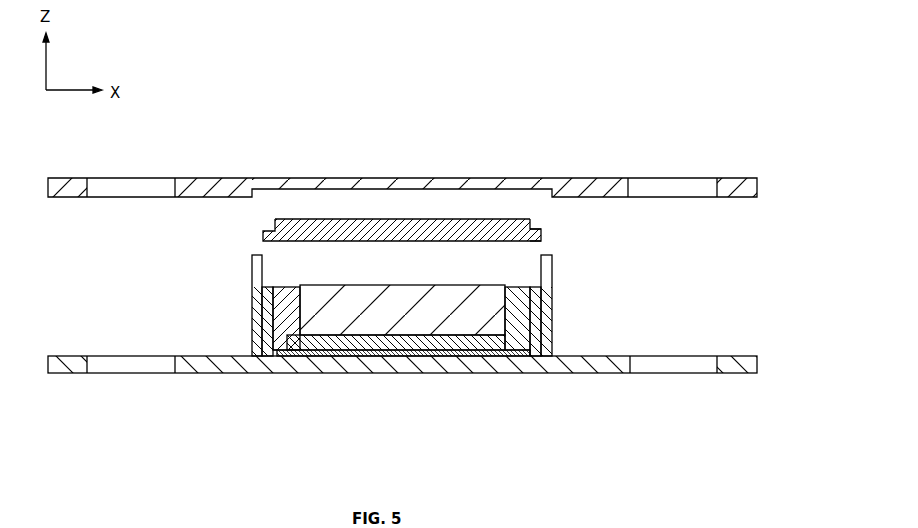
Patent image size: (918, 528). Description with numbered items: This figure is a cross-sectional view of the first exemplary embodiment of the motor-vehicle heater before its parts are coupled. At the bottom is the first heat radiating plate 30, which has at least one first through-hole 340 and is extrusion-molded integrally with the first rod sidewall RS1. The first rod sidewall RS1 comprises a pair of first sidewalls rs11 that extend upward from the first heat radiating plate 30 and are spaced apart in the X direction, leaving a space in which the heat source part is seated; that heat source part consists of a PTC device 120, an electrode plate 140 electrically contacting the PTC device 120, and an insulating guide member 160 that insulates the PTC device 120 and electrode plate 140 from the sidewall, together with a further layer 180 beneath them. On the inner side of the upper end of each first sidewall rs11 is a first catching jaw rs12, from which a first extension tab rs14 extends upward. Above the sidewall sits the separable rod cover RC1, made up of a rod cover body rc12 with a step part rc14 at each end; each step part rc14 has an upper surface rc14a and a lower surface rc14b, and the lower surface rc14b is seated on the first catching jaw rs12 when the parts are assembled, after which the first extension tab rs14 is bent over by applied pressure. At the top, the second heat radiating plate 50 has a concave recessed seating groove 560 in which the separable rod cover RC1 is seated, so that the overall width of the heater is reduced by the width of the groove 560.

The second heat radiating plate 50 is at (402, 139).
The concave recessed seating groove 560 is at (310, 190).
The rod cover body rc12 is at (398, 226).
The step part rc14 is at (488, 190).
The upper surface of step part rc14a is at (542, 229).
The lower surface of step part rc14b is at (545, 240).
The separable rod cover RC1 is at (505, 212).
The first heat radiating plate 30 is at (402, 366).
The first through-hole 340 is at (680, 366).
The first extension tab rs14 is at (251, 262).
The first catching jaw rs12 is at (262, 290).
The first sidewall rs11 is at (262, 317).
The PTC device 120 is at (334, 314).
The electrode plate 140 is at (380, 347).
The insulating guide member 160 is at (281, 320).
The adhesive layer 180 is at (413, 360).
The first rod sidewall RS1 is at (228, 346).